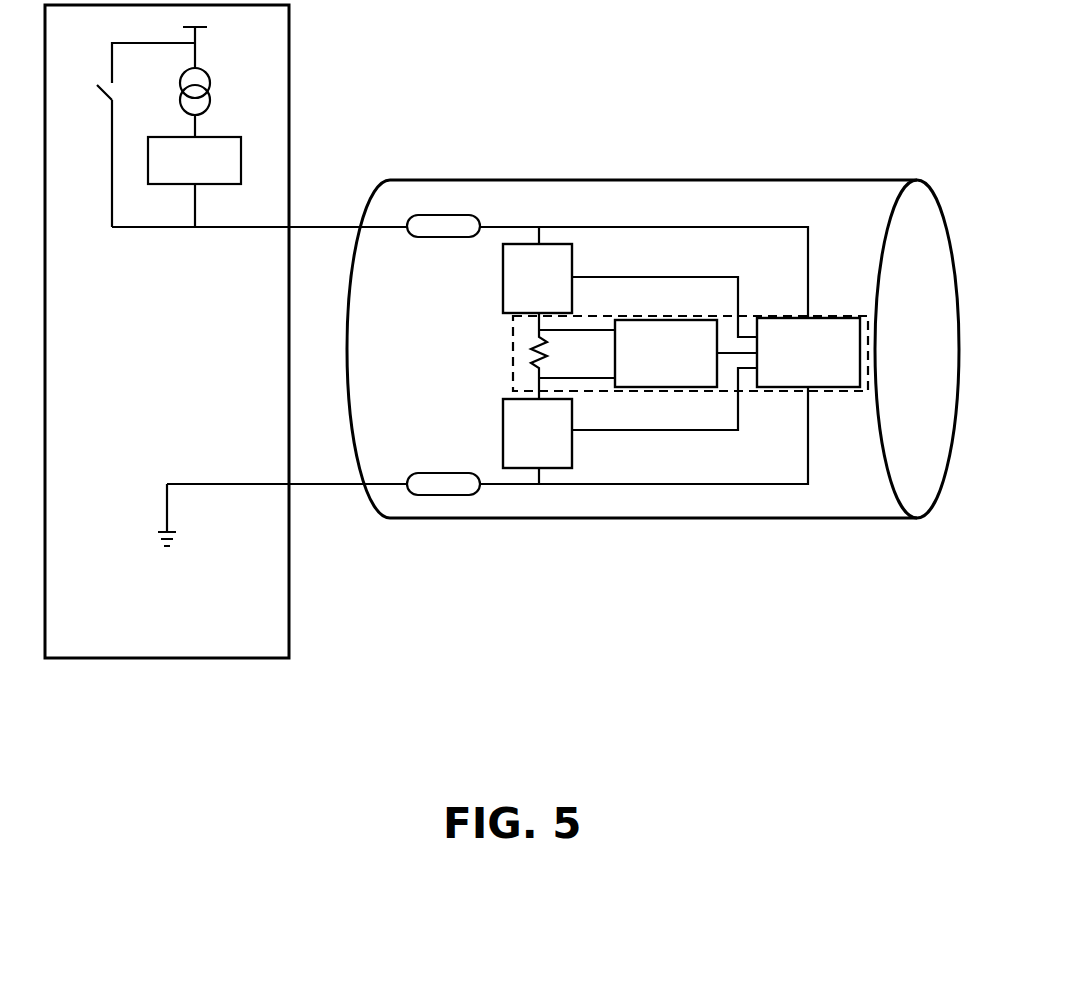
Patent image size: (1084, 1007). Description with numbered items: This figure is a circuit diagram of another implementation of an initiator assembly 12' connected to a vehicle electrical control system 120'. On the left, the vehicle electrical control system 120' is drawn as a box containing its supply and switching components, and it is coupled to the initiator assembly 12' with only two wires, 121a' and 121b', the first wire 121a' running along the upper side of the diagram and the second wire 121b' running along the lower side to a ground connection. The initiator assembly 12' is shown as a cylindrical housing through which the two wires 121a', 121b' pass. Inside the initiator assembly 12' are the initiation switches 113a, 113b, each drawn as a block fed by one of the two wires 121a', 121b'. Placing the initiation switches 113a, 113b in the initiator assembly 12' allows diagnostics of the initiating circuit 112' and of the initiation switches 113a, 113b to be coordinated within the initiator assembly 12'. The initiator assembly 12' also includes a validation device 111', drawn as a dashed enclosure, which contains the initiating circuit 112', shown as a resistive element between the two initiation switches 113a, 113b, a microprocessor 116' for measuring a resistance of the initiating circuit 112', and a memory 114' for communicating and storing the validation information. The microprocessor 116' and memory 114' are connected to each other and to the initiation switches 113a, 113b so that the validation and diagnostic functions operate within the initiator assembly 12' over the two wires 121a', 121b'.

The vehicle electrical control system 120' is at (207, 331).
The wire 121a' is at (460, 223).
The wire 121b' is at (483, 479).
The initiator assembly 12' is at (653, 327).
The validation device 111' is at (690, 218).
The initiating circuit 112' is at (526, 356).
The initiation switch 113a is at (503, 275).
The initiation switch 113b is at (503, 438).
The memory 114' is at (808, 352).
The microprocessor 116' is at (686, 353).